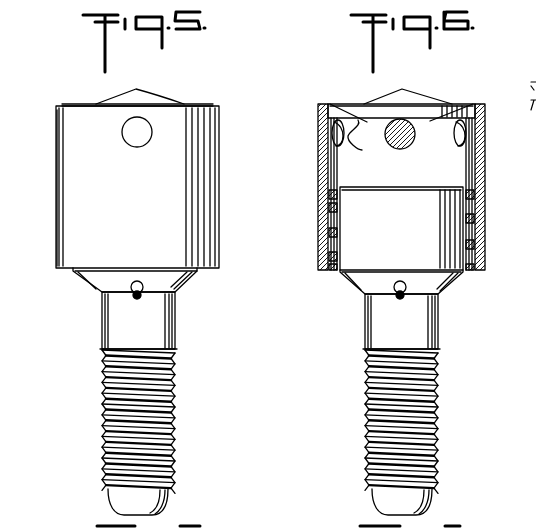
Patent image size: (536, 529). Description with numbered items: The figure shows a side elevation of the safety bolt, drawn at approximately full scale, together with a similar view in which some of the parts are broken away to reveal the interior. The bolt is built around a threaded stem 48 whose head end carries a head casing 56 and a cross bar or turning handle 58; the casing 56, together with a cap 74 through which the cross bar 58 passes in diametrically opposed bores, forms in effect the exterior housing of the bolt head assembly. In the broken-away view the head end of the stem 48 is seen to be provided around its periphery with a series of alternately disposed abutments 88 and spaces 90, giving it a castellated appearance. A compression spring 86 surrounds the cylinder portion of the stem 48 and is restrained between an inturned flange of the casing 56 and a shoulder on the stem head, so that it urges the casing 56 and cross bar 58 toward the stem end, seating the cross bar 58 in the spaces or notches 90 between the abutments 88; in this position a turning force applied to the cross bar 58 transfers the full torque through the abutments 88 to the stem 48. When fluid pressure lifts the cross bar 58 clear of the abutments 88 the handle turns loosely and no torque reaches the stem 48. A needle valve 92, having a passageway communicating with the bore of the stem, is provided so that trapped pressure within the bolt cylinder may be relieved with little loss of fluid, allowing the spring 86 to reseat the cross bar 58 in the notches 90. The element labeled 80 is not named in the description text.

In FIG. 5, the stem 48 is at (100, 331).
In FIG. 6, the stem 48 is at (364, 342).
In FIG. 5, the head casing 56 is at (52, 147).
In FIG. 6, the head casing 56 is at (312, 158).
In FIG. 5, the cross bar 58 is at (130, 124).
In FIG. 6, the cross bar 58 is at (391, 128).
In FIG. 5, the cap 74 is at (181, 103).
In FIG. 6, the cap 74 is at (466, 116).
In FIG. 5, the inner body 80 is at (56, 206).
In FIG. 6, the inner body 80 is at (318, 228).
In FIG. 6, the compression spring 86 is at (318, 195).
In FIG. 6, the abutments 88 is at (366, 121).
In FIG. 6, the spaces 90 is at (392, 146).
In FIG. 5, the needle valve 92 is at (131, 293).
In FIG. 6, the needle valve 92 is at (394, 295).